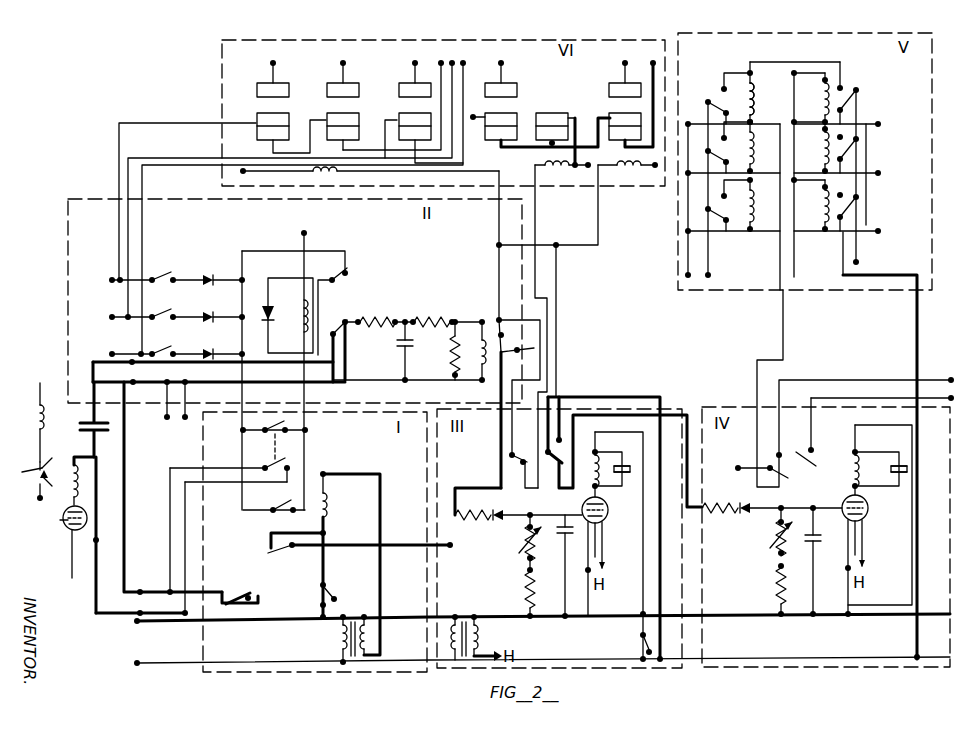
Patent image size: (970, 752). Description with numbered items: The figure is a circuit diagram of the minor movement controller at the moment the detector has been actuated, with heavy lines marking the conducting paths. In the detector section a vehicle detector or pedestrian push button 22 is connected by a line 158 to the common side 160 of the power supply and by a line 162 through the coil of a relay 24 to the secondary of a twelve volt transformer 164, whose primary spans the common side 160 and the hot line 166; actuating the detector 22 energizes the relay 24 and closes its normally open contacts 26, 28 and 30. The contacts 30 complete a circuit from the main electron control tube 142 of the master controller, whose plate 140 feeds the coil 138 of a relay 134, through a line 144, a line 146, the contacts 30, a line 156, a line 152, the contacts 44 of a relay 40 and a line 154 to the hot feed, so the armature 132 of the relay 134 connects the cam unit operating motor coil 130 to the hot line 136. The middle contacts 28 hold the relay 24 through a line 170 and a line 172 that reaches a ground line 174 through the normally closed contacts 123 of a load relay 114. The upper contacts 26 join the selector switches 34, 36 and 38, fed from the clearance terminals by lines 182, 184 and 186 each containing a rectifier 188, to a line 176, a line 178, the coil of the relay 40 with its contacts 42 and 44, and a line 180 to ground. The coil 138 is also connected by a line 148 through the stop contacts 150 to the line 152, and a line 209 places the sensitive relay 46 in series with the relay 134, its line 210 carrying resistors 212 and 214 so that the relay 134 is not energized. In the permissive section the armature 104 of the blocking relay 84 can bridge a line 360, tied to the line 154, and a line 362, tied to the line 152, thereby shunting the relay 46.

The vehicle detector or pedestrian push button 22 is at (336, 602).
The relay 24 is at (327, 500).
The upper contacts 26 is at (282, 506).
The middle contacts 28 is at (290, 550).
The contacts 30 is at (234, 598).
The selector switch 34 is at (152, 276).
The selector switch 36 is at (152, 312).
The selector switch 38 is at (162, 354).
The relay 40 is at (302, 310).
The contacts 42 is at (336, 280).
The contacts 44 is at (330, 332).
The relay 46 is at (482, 345).
The blocking relay 84 is at (754, 100).
The armature 104 is at (714, 90).
The relay 114 is at (539, 174).
The normally closed contacts 123 is at (556, 112).
The cam unit operating motor coil 130 is at (34, 412).
The armature 132 is at (36, 466).
The relay 134 is at (60, 472).
The hot line 136 is at (34, 480).
The coil 138 is at (98, 494).
The plate 140 is at (64, 516).
The main electron control tube 142 is at (68, 530).
The line 144 is at (502, 147).
The line 146 is at (98, 590).
The line 148 is at (100, 449).
The stop contacts 150 is at (90, 423).
The line 152 is at (134, 381).
The line 154 is at (180, 364).
The line 156 is at (156, 583).
The line 158 is at (320, 616).
The common side 160 is at (266, 622).
The line 162 is at (330, 584).
The transformer 164 is at (358, 664).
The hot line 166 is at (300, 658).
The line 170 is at (314, 532).
The line 172 is at (553, 153).
The ground line 174 is at (628, 152).
The line 176 is at (242, 373).
The line 178 is at (304, 416).
The line 180 is at (304, 260).
The line 182 is at (118, 284).
The line 184 is at (118, 319).
The line 186 is at (136, 352).
The rectifier 188 is at (214, 266).
The line 209 is at (368, 382).
The line 210 is at (456, 320).
The resistor 212 is at (450, 318).
The resistor 214 is at (394, 318).
The line 360 is at (712, 264).
The line 362 is at (684, 264).